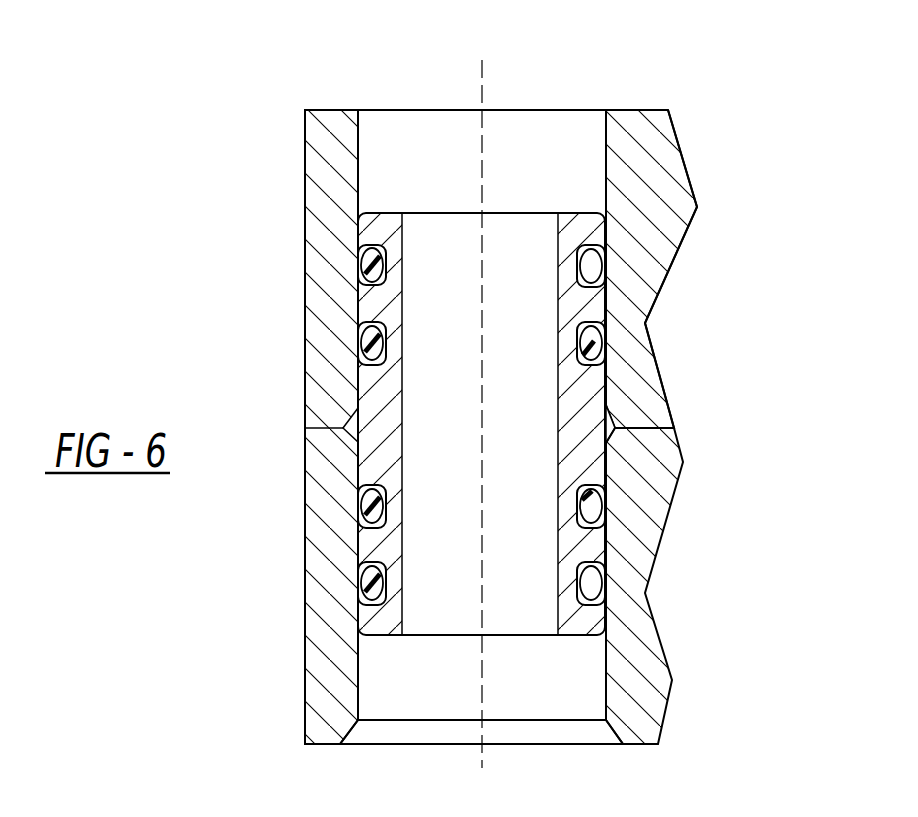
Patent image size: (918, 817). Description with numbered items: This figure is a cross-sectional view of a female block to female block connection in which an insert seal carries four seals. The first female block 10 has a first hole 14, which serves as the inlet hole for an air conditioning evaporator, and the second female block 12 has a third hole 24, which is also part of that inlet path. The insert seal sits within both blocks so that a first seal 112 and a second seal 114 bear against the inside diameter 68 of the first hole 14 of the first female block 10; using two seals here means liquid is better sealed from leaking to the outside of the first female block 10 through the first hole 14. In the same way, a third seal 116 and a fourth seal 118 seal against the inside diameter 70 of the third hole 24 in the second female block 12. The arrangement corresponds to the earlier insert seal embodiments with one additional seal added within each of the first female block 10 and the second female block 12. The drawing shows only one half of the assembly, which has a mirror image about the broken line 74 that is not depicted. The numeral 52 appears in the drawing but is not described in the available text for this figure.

The first female block 10 is at (307, 210).
The second female block 12 is at (307, 585).
The first hole 14 is at (604, 138).
The third hole 24 is at (603, 700).
The longitudinal axis / sleeve 52 is at (482, 83).
The inside diameter of the first hole 68 is at (604, 165).
The inside diameter of the third hole 70 is at (605, 650).
The broken line 74 is at (681, 150).
The first seal 112 is at (593, 270).
The second seal 114 is at (590, 342).
The third seal 116 is at (590, 508).
The fourth seal 118 is at (593, 588).